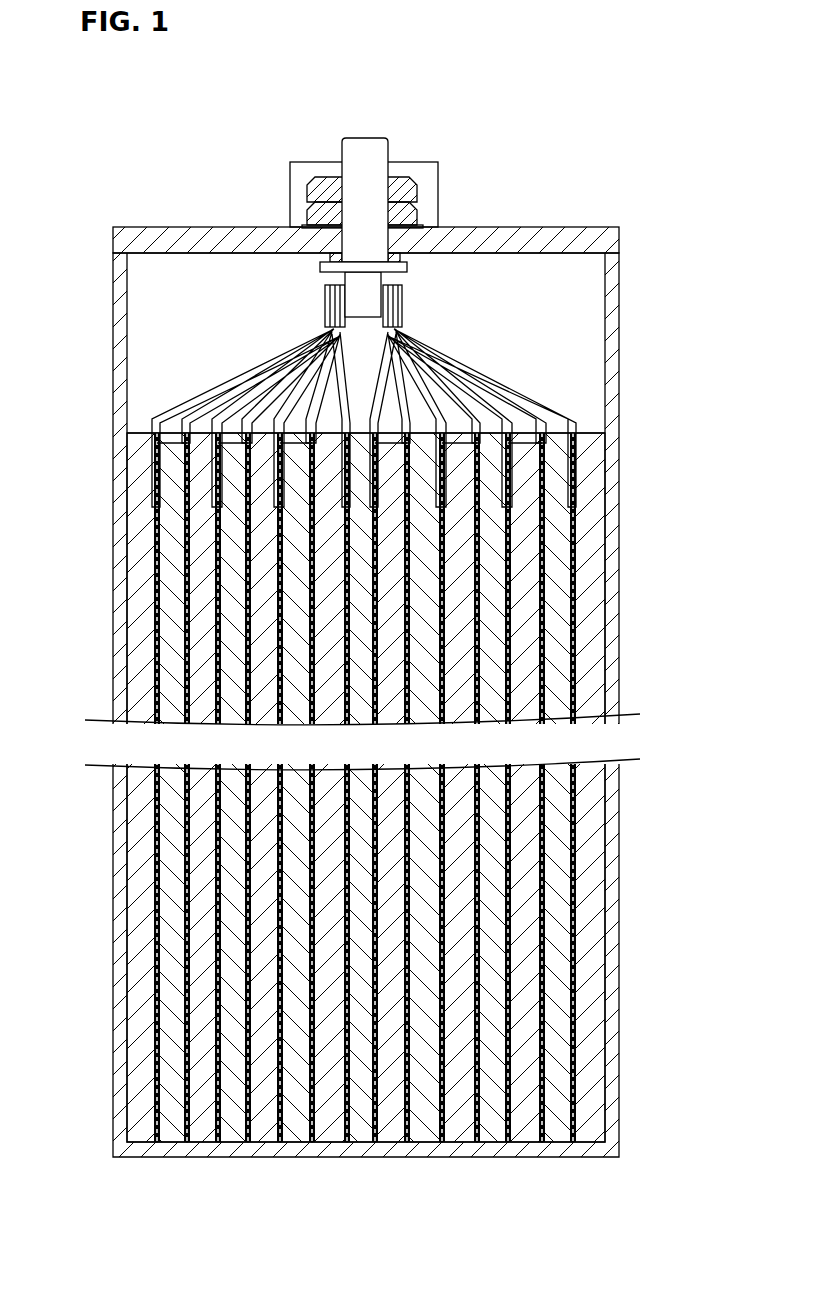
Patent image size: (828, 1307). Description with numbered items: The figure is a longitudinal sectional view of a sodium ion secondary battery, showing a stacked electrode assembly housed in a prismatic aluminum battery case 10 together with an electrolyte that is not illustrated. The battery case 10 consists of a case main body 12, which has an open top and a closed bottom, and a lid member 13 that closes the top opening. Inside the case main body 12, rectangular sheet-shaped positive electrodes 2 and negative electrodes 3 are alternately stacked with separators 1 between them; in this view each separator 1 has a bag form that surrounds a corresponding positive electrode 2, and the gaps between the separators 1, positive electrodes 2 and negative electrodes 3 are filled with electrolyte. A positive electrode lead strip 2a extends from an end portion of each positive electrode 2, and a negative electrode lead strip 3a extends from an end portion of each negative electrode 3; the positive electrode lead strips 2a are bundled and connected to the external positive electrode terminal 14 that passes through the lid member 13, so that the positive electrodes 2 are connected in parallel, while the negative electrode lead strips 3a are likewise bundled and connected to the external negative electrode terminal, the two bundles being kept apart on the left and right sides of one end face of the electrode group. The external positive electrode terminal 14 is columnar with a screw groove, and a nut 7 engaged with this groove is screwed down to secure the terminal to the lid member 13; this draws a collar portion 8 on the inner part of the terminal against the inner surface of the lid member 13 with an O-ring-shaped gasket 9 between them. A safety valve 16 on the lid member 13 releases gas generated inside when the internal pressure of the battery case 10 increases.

The separator 1 is at (158, 605).
The positive electrode 2 is at (176, 544).
The negative electrode 3 is at (143, 709).
The positive electrode lead strip 2a is at (200, 416).
The negative electrode lead strip 3a is at (232, 378).
The nut 7 is at (320, 183).
The collar portion 8 is at (322, 268).
The gasket 9 is at (400, 252).
The battery case 10 is at (105, 127).
The case main body 12 is at (118, 278).
The lid member 13 is at (160, 240).
The external positive electrode terminal 14 is at (377, 152).
The safety valve 16 is at (423, 178).